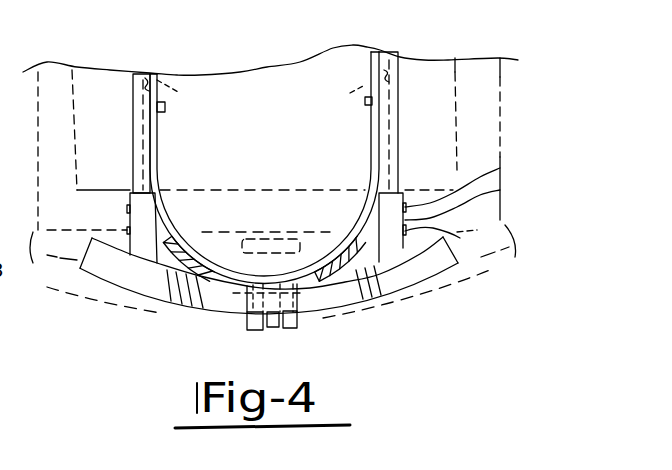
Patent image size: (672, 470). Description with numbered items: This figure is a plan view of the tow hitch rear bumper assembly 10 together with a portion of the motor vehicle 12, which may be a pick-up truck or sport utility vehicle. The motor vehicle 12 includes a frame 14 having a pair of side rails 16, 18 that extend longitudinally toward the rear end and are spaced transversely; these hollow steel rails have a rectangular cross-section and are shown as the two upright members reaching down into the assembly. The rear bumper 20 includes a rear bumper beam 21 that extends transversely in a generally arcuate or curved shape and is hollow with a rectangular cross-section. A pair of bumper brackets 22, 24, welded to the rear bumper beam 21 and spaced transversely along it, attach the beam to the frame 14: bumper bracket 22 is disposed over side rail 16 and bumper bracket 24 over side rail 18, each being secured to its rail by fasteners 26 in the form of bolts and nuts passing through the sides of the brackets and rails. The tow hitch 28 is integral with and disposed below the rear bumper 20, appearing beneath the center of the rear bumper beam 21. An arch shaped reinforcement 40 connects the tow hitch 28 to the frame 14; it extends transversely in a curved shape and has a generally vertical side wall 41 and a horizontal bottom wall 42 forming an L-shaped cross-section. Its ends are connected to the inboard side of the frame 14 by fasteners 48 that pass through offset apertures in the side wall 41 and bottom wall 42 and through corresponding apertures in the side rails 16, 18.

The tow hitch rear bumper assembly 10 is at (338, 321).
The motor vehicle 12 is at (506, 92).
The frame 14 is at (405, 85).
The side rail 16 is at (384, 52).
The side rail 18 is at (140, 88).
The rear bumper 20 is at (423, 284).
The rear bumper beam 21 is at (440, 261).
The bumper bracket 22 is at (500, 191).
The bumper bracket 24 is at (127, 207).
The fasteners 26 is at (500, 169).
The tow hitch 28 is at (243, 329).
The arch shaped reinforcement 40 is at (158, 148).
The side wall 41 is at (161, 188).
The bottom wall 42 is at (176, 238).
The fasteners 48 is at (166, 107).